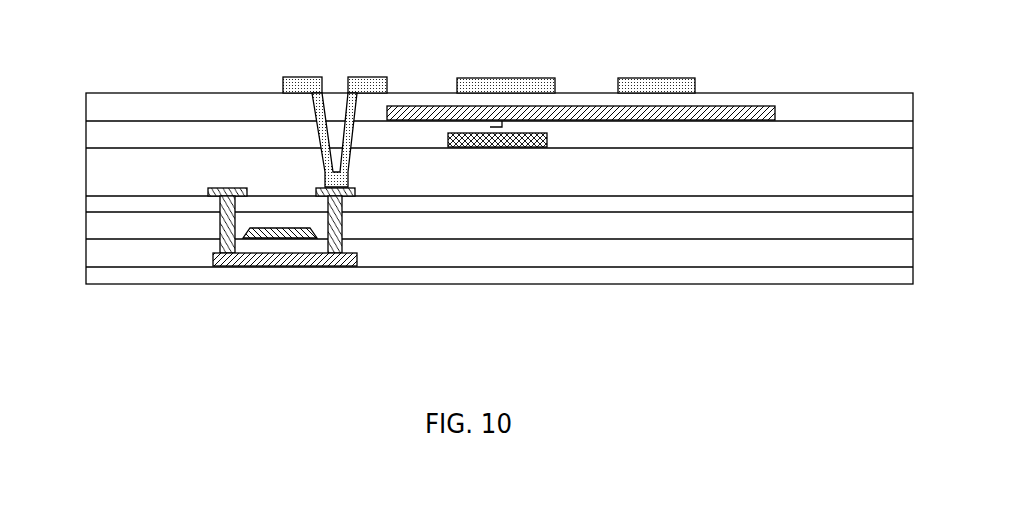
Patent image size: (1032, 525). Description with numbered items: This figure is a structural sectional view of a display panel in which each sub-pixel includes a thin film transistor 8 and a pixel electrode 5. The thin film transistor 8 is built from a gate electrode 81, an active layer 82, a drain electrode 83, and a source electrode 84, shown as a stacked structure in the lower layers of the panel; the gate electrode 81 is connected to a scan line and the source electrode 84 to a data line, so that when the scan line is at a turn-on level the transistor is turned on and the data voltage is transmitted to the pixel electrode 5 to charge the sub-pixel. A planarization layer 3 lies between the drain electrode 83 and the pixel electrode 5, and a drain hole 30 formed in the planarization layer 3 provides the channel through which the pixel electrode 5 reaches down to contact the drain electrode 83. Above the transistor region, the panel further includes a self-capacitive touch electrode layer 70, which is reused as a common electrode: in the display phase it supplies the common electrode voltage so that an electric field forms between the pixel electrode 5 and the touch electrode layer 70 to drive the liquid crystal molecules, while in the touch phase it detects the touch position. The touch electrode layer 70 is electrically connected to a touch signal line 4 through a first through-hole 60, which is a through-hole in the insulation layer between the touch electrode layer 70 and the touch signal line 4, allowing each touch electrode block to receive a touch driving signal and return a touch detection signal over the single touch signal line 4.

The planarization layer 3 is at (98, 168).
The touch signal line 4 is at (517, 138).
The pixel electrode 5 is at (365, 88).
The drain hole 30 is at (322, 167).
The first through-hole 60 is at (490, 127).
The self-capacitive touch electrode layer 70 is at (577, 118).
The thin film transistor 8 is at (283, 285).
The gate electrode 81 is at (292, 280).
The active layer 82 is at (268, 262).
The drain electrode 83 is at (342, 196).
The source electrode 84 is at (224, 207).